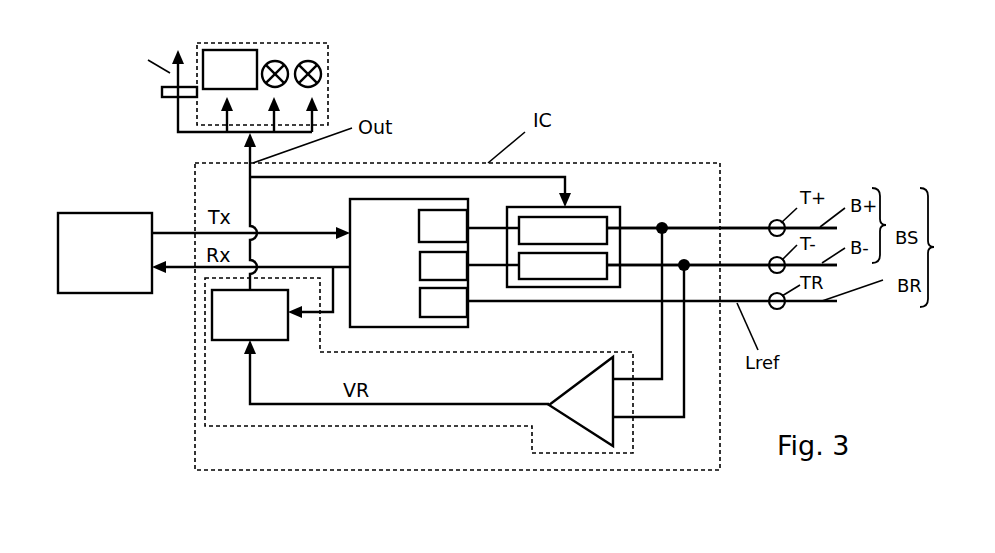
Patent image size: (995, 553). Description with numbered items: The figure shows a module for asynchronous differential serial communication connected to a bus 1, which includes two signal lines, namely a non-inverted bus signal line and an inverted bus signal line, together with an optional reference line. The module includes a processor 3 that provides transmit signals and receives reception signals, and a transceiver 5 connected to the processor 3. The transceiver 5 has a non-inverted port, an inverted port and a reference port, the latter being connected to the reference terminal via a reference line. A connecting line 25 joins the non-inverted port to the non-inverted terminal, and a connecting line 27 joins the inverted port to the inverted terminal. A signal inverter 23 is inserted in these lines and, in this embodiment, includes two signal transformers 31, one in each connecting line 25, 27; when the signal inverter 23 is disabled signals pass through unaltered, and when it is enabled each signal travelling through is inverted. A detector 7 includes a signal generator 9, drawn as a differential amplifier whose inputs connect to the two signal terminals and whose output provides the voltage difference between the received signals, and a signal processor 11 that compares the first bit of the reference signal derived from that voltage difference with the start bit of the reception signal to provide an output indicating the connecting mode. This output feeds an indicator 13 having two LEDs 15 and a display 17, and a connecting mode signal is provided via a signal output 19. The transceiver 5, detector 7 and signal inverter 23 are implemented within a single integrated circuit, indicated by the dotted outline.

The bus 1 is at (941, 247).
The processor 3 is at (105, 253).
The transceiver 5 is at (409, 263).
The detector 7 is at (293, 427).
The signal generator 9 is at (578, 398).
The signal processor 11 is at (250, 315).
The indicator 13 is at (328, 100).
The LEDs 15 is at (272, 62).
The display 17 is at (230, 69).
The signal output 19 is at (162, 88).
The signal inverter 23 is at (582, 206).
The connecting line 25 is at (697, 227).
The connecting line 27 is at (717, 263).
The signal transformers 31 is at (563, 248).